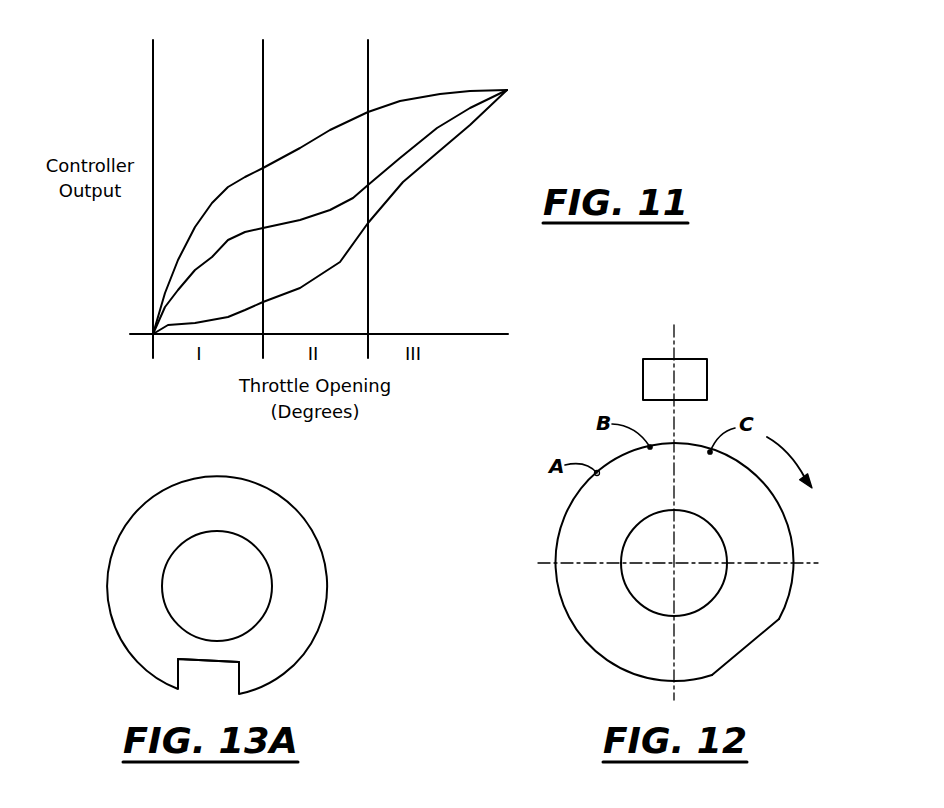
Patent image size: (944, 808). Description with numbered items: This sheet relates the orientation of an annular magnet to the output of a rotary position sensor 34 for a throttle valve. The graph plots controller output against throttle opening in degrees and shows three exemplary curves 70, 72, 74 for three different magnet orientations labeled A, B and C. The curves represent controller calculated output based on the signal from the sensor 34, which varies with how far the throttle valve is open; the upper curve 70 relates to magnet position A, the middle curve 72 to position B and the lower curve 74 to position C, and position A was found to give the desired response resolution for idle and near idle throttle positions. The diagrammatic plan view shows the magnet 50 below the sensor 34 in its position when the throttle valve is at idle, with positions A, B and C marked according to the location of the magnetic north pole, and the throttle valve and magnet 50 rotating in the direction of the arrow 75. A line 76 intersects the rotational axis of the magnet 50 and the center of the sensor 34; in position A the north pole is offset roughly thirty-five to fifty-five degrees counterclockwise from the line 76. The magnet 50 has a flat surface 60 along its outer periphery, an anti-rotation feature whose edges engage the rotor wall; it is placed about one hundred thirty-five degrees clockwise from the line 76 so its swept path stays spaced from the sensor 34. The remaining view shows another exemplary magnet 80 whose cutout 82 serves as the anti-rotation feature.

In FIG. 11, the upper curve 70 is at (332, 125).
In FIG. 11, the middle curve 72 is at (433, 130).
In FIG. 11, the lower curve 74 is at (403, 182).
In FIG. 12, the rotary position sensor 34 is at (707, 359).
In FIG. 12, the magnet 50 is at (612, 650).
In FIG. 12, the flat surface 60 is at (740, 648).
In FIG. 12, the arrow 75 is at (788, 457).
In FIG. 12, the line 76 is at (675, 688).
In FIG. 13A, the magnet 80 is at (288, 535).
In FIG. 13A, the cutout 82 is at (213, 663).